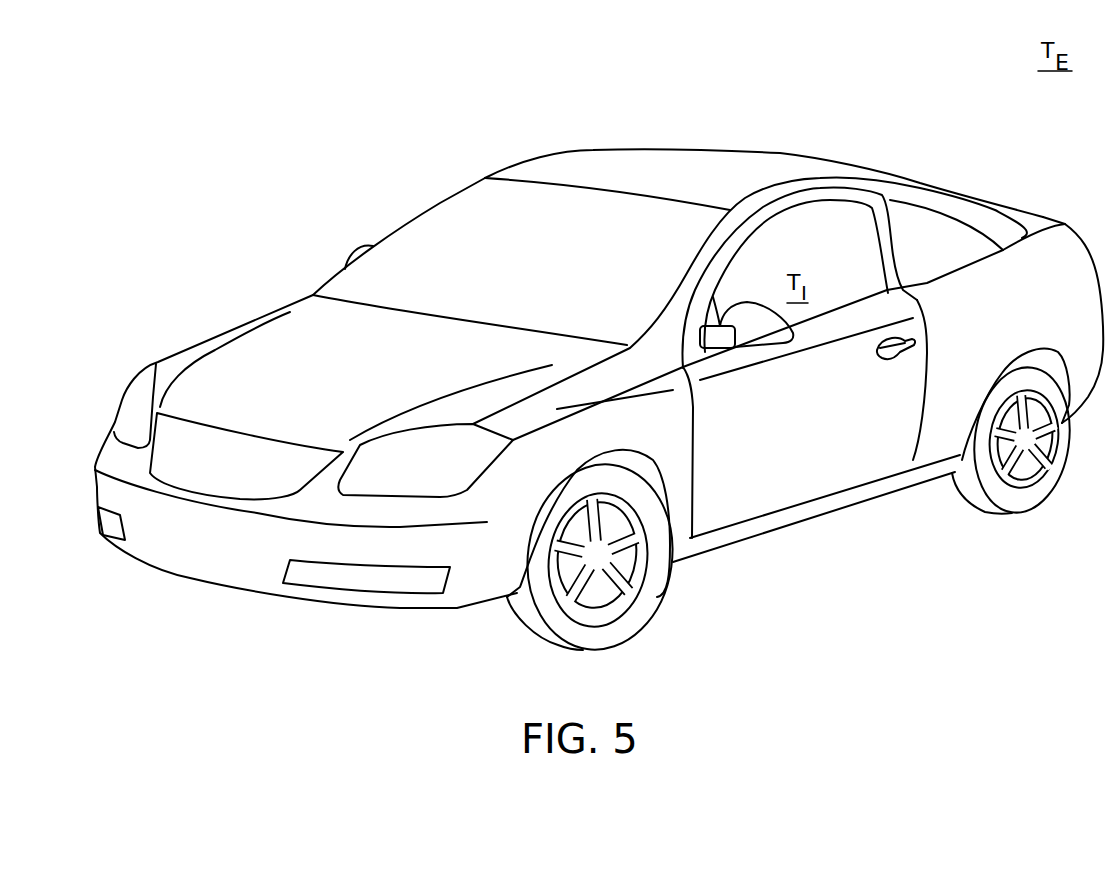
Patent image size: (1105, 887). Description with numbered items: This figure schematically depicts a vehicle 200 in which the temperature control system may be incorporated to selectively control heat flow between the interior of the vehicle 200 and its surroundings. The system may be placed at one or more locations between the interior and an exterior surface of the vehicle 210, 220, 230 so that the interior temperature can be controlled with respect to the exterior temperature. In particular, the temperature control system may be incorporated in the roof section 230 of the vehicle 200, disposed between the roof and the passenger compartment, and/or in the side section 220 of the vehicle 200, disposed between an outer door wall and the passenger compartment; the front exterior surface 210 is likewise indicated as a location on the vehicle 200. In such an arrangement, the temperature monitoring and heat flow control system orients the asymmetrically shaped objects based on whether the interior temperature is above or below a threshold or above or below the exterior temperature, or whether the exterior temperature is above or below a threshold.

The vehicle 200 is at (599, 378).
The exterior surface of the vehicle 210 is at (270, 346).
The side section 220 is at (828, 482).
The roof section 230 is at (713, 157).